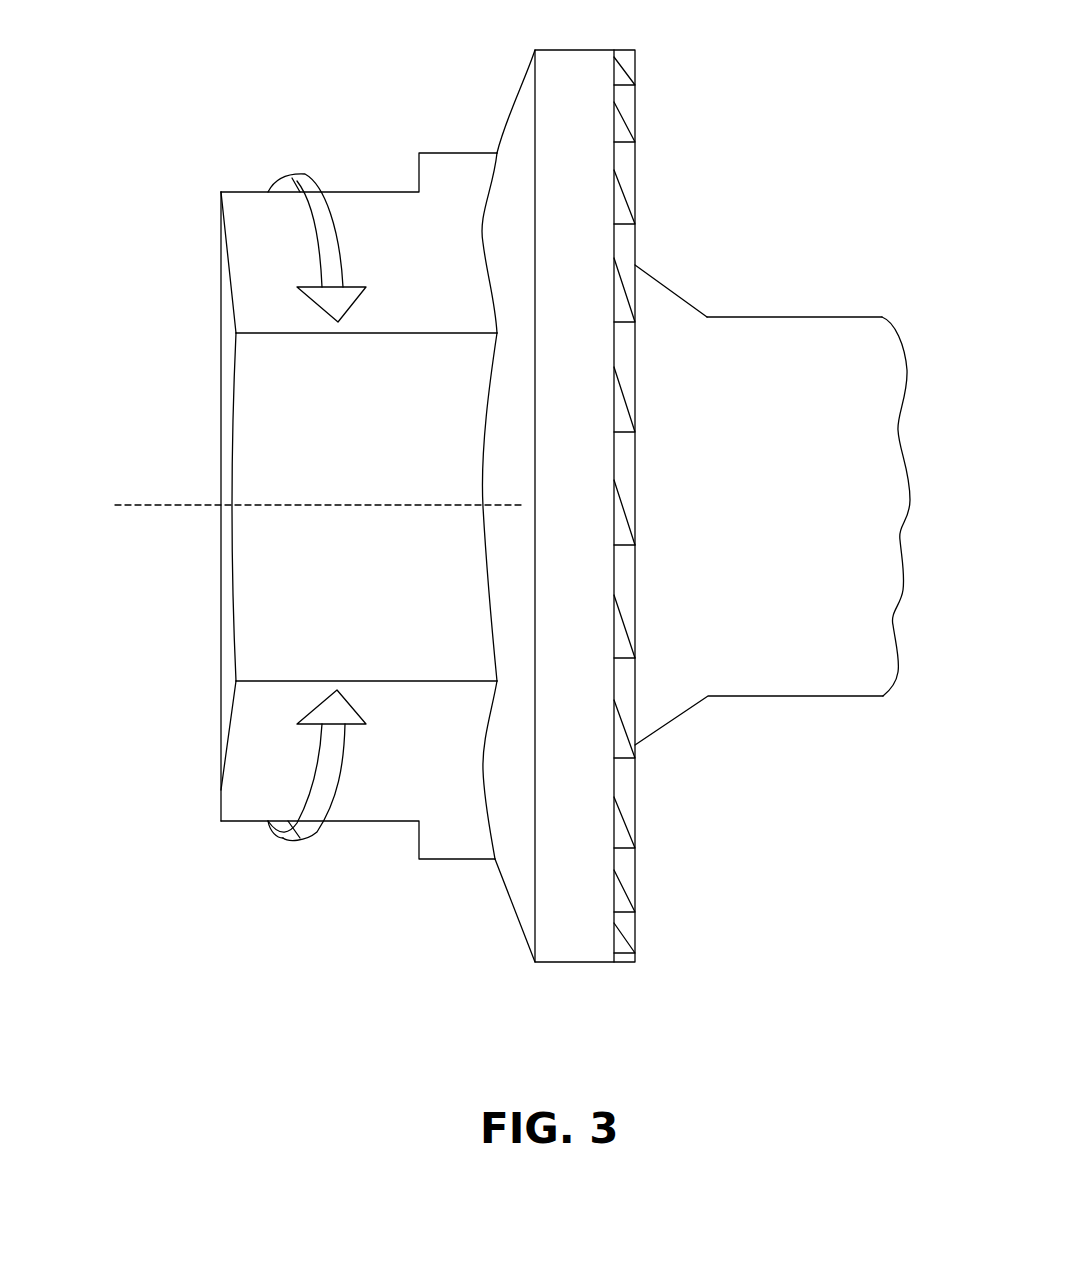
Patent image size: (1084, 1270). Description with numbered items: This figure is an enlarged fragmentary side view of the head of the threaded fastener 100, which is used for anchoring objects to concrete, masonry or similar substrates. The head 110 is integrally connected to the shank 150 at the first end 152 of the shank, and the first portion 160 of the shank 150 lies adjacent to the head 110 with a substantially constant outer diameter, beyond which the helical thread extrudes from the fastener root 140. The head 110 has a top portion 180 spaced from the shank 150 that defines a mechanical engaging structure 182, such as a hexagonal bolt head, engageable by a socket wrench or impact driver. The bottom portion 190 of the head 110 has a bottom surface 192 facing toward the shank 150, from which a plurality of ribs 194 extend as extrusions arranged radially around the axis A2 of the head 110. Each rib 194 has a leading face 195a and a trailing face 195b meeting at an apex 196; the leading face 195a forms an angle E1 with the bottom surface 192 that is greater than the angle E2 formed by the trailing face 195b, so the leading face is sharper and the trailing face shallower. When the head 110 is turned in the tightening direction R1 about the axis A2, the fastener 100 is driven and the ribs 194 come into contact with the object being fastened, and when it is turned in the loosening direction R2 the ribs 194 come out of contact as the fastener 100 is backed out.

The threaded fastener 100 is at (218, 74).
The head 110 is at (243, 265).
The top portion 180 is at (266, 655).
The mechanical engaging structure 182 is at (408, 712).
The bottom portion 190 is at (553, 92).
The bottom surface 192 is at (614, 778).
The ribs 194 is at (614, 200).
The leading face 195a is at (629, 560).
The trailing face 195b is at (622, 512).
The apex 196 is at (640, 85).
The first end 152 is at (645, 292).
The shank 150 is at (736, 338).
The fastener root 140 is at (823, 358).
The first portion 160 is at (808, 633).
The angle ε1 E1 is at (620, 658).
The angle ε2 E2 is at (614, 620).
The rotation R1 is at (317, 248).
The rotation R2 is at (317, 765).
The axis A2 is at (302, 505).